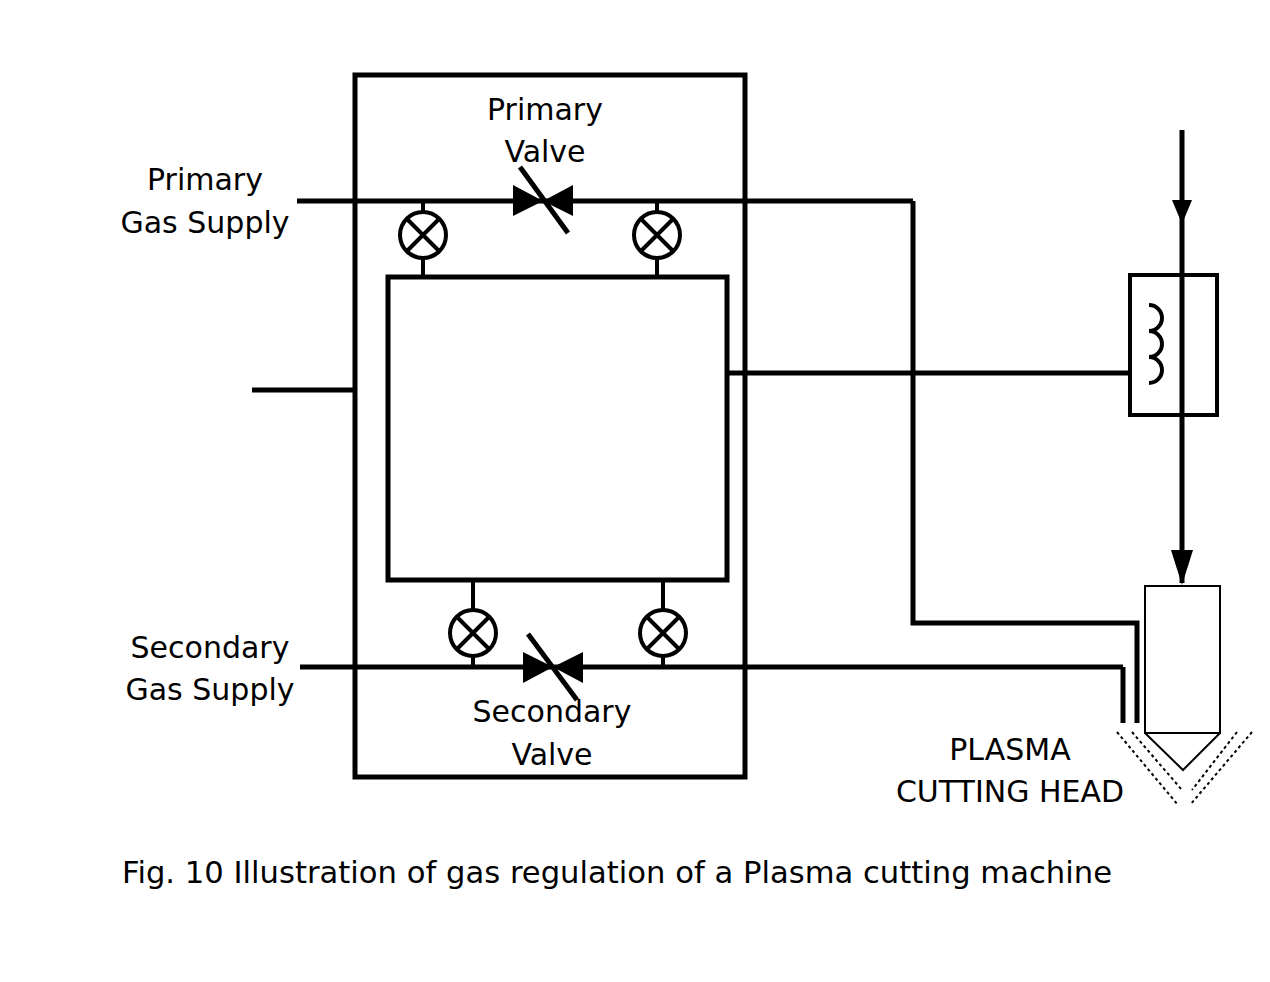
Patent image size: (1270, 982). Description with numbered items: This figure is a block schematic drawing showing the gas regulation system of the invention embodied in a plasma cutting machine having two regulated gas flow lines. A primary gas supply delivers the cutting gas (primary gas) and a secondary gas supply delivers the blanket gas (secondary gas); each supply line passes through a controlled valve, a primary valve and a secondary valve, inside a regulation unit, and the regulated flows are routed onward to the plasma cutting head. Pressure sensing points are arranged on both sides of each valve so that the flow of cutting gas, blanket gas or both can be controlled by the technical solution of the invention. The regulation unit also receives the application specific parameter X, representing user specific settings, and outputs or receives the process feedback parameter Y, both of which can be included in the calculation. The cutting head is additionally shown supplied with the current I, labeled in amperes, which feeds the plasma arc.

The application specific parameter X is at (266, 387).
The process feedback parameter Y is at (928, 356).
The plasma current I is at (1177, 332).